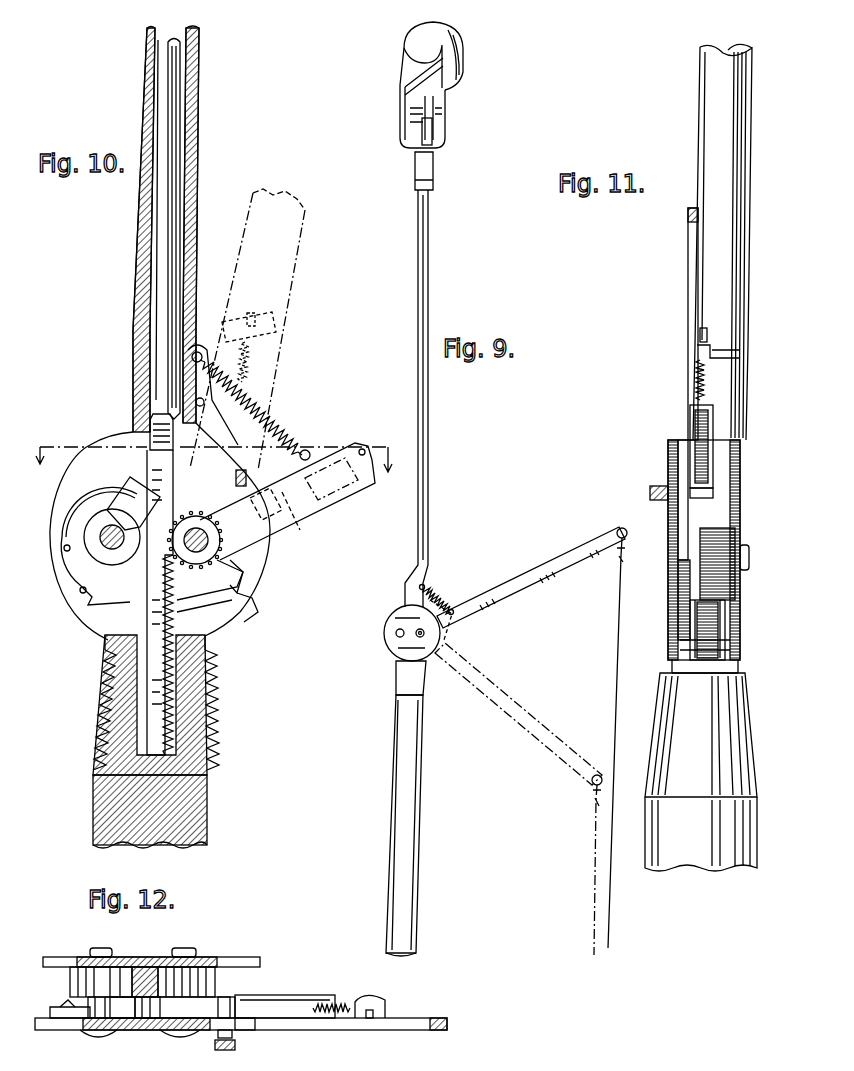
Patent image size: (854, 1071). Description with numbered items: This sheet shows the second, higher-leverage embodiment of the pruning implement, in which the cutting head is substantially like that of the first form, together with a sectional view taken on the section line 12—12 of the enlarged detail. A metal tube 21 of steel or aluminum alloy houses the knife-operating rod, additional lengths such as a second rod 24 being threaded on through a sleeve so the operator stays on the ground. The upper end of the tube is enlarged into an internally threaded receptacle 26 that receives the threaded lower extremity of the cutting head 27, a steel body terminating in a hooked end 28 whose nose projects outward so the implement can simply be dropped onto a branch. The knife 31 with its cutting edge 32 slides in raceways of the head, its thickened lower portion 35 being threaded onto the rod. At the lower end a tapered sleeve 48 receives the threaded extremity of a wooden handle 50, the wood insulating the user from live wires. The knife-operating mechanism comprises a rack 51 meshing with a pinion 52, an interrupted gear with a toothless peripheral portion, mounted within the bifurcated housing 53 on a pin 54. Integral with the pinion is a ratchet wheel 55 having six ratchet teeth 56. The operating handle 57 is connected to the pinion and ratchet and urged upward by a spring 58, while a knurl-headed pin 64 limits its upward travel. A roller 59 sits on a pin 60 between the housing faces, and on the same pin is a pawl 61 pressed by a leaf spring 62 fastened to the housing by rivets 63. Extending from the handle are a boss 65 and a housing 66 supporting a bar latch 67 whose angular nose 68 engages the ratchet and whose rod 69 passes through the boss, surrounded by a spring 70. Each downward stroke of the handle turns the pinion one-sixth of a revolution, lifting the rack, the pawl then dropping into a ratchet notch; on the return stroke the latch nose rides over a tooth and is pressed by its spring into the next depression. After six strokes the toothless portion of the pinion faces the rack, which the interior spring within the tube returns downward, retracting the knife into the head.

In FIG. 10, the section line 12— 12 is at (210, 475).
In FIG. 10, the metal tube 21 is at (199, 122).
In FIG. 9, the metal tube 21 is at (428, 290).
In FIG. 10, the second rod 24 is at (168, 236).
In FIG. 9, the receptacle 26 is at (433, 178).
In FIG. 9, the cutting head 27 is at (445, 137).
In FIG. 9, the hooked end 28 is at (464, 60).
In FIG. 9, the knife 31 is at (437, 125).
In FIG. 9, the cutting edge 32 is at (428, 86).
In FIG. 9, the thickened lower portion 35 is at (420, 132).
In FIG. 10, the tapered sleeve 48 is at (100, 716).
In FIG. 9, the tapered sleeve 48 is at (396, 682).
In FIG. 11, the tapered sleeve 48 is at (745, 728).
In FIG. 10, the wooden handle 50 is at (208, 818).
In FIG. 9, the wooden handle 50 is at (416, 797).
In FIG. 11, the wooden handle 50 is at (757, 838).
In FIG. 10, the rack 51 is at (162, 685).
In FIG. 11, the rack 51 is at (718, 610).
In FIG. 12, the rack 51 is at (143, 972).
In FIG. 10, the pinion 52 is at (232, 570).
In FIG. 11, the pinion 52 is at (735, 548).
In FIG. 12, the pinion 52 is at (208, 967).
In FIG. 10, the housing 53 is at (55, 516).
In FIG. 9, the housing 53 is at (396, 618).
In FIG. 11, the housing 53 is at (741, 470).
In FIG. 12, the housing 53 is at (183, 957).
In FIG. 10, the pin 54 is at (200, 553).
In FIG. 9, the pin 54 is at (421, 640).
In FIG. 11, the pin 54 is at (750, 558).
In FIG. 10, the ratchet wheel 55 is at (238, 578).
In FIG. 11, the ratchet wheel 55 is at (690, 588).
In FIG. 12, the ratchet wheel 55 is at (158, 1018).
In FIG. 10, the ratchet teeth 56 is at (242, 598).
In FIG. 10, the operating handle 57 is at (300, 218).
In FIG. 9, the operating handle 57 is at (556, 566).
In FIG. 11, the operating handle 57 is at (689, 262).
In FIG. 12, the operating handle 57 is at (438, 1032).
In FIG. 10, the spring 58 is at (265, 415).
In FIG. 10, the roller 59 is at (92, 552).
In FIG. 12, the roller 59 is at (70, 982).
In FIG. 10, the pin 60 is at (116, 550).
In FIG. 9, the pin 60 is at (396, 636).
In FIG. 12, the pin 60 is at (100, 1036).
In FIG. 10, the pawl 61 is at (132, 494).
In FIG. 12, the pawl 61 is at (128, 1018).
In FIG. 10, the leaf spring 62 is at (95, 490).
In FIG. 12, the leaf spring 62 is at (78, 1032).
In FIG. 10, the rivets 63 is at (64, 549).
In FIG. 10, the knurl-headed pin 64 is at (246, 482).
In FIG. 9, the knurl-headed pin 64 is at (447, 624).
In FIG. 11, the knurl-headed pin 64 is at (650, 492).
In FIG. 12, the knurl-headed pin 64 is at (235, 1045).
In FIG. 10, the boss 65 is at (272, 332).
In FIG. 11, the boss 65 is at (712, 352).
In FIG. 12, the boss 65 is at (381, 998).
In FIG. 10, the housing 66 is at (355, 492).
In FIG. 11, the housing 66 is at (714, 432).
In FIG. 12, the housing 66 is at (290, 996).
In FIG. 10, the bar latch 67 is at (318, 497).
In FIG. 10, the angular nose 68 is at (270, 520).
In FIG. 11, the angular nose 68 is at (714, 493).
In FIG. 12, the angular nose 68 is at (237, 1000).
In FIG. 10, the rod 69 is at (262, 320).
In FIG. 11, the rod 69 is at (700, 332).
In FIG. 12, the rod 69 is at (372, 1020).
In FIG. 10, the spring 70 is at (250, 360).
In FIG. 11, the spring 70 is at (697, 388).
In FIG. 12, the spring 70 is at (345, 1004).